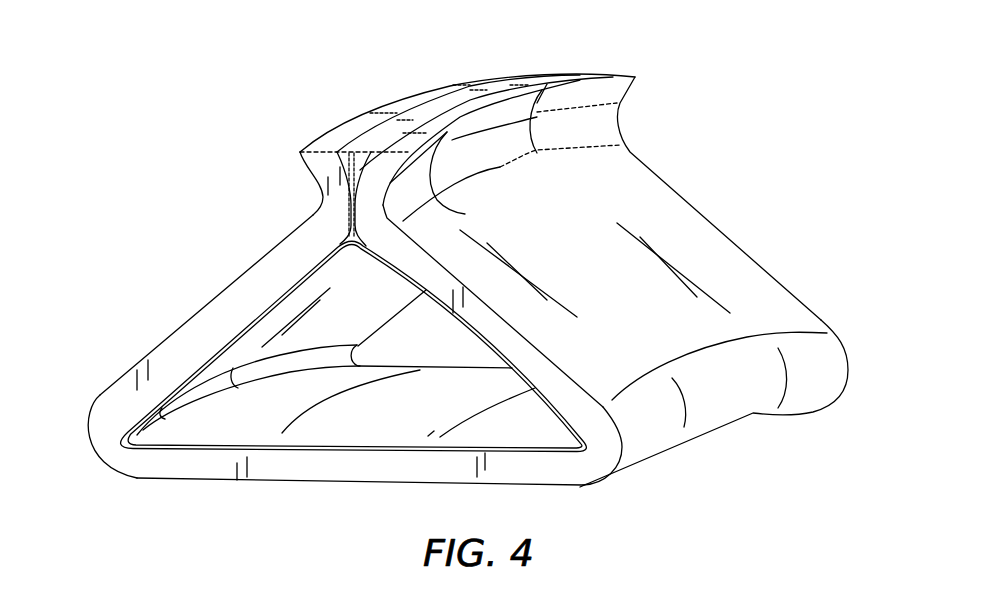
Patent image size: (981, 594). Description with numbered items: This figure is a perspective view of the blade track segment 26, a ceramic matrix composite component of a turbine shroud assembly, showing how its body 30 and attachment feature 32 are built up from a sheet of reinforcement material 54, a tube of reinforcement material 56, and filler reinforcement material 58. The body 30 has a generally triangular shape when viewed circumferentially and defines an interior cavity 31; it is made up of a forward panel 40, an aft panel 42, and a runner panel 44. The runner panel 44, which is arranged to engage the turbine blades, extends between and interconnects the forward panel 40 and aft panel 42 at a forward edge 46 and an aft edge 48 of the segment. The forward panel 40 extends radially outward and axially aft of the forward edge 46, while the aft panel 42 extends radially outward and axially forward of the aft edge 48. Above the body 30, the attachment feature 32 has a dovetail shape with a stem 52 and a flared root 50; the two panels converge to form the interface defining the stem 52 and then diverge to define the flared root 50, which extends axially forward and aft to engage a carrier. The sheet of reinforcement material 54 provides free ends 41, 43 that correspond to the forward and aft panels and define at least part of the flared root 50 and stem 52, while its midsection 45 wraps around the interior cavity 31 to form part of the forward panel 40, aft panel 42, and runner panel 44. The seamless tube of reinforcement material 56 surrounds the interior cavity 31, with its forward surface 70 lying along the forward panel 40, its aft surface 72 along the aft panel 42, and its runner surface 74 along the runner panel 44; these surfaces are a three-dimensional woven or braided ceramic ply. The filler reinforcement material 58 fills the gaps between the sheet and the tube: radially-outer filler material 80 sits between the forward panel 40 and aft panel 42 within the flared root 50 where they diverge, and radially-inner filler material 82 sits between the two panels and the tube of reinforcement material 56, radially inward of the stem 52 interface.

The blade track segment 26 is at (804, 99).
The body 30 is at (826, 231).
The interior cavity 31 is at (351, 416).
The attachment feature 32 is at (668, 98).
The forward panel 40 is at (175, 289).
The free end 41 is at (433, 91).
The aft panel 42 is at (636, 312).
The free end 43 is at (545, 83).
The runner panel 44 is at (272, 490).
The midsection 45 is at (104, 358).
The forward edge 46 is at (157, 481).
The aft edge 48 is at (583, 490).
The flared root 50 is at (281, 149).
The stem 52 is at (271, 182).
The sheet of reinforcement material 54 is at (607, 424).
The tube of reinforcement material 56 is at (613, 472).
The filler reinforcement material 58 is at (362, 227).
The forward surface 70 is at (262, 316).
The aft surface 72 is at (468, 338).
The runner surface 74 is at (408, 442).
The radially-outer filler material 80 is at (366, 143).
The radially-inner filler material 82 is at (353, 240).